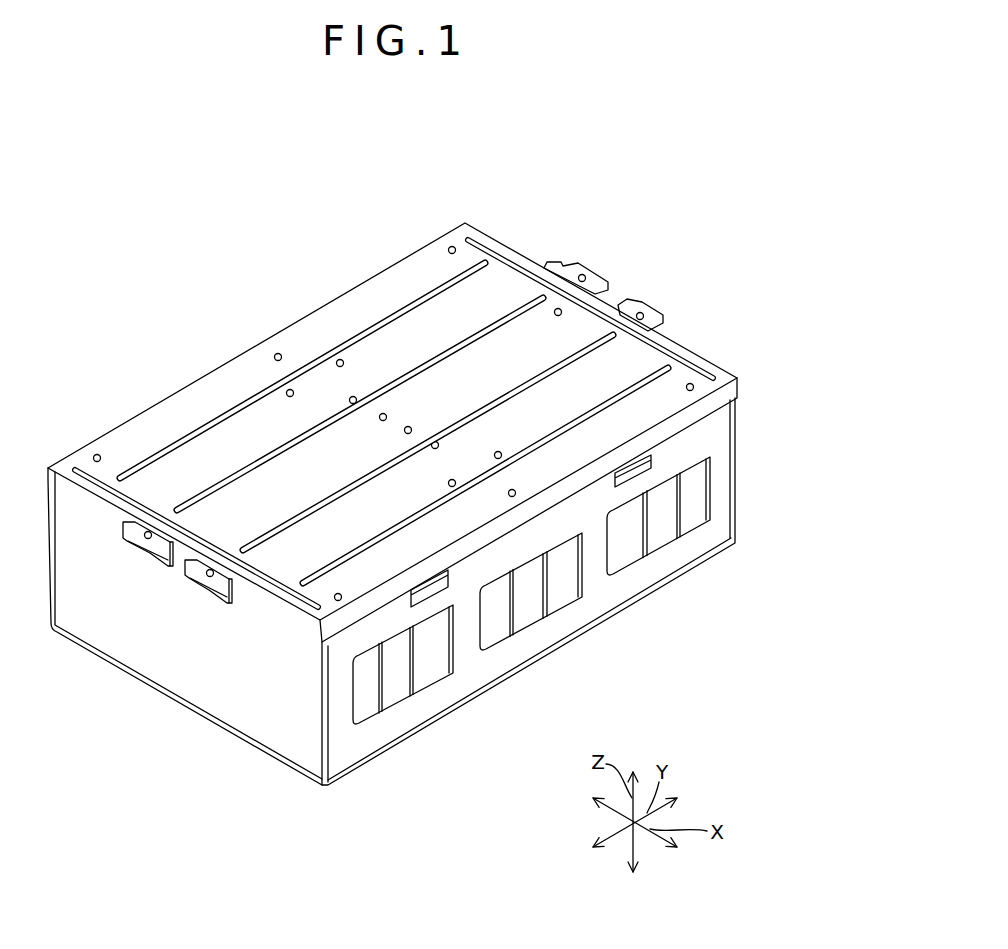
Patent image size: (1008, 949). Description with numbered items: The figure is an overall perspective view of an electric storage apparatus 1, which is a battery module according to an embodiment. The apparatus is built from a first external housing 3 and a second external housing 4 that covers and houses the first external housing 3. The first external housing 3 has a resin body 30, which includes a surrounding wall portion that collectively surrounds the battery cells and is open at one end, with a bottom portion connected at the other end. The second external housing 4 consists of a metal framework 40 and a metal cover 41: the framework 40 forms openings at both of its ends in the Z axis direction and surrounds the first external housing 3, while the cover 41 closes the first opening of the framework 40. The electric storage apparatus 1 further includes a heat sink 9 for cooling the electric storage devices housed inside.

The electric storage apparatus 1 is at (792, 162).
The first external housing 3 is at (695, 492).
The body 30 is at (658, 516).
The second external housing 4 is at (728, 200).
The framework 40 is at (738, 400).
The cover 41 is at (580, 327).
The heat sink 9 is at (736, 542).